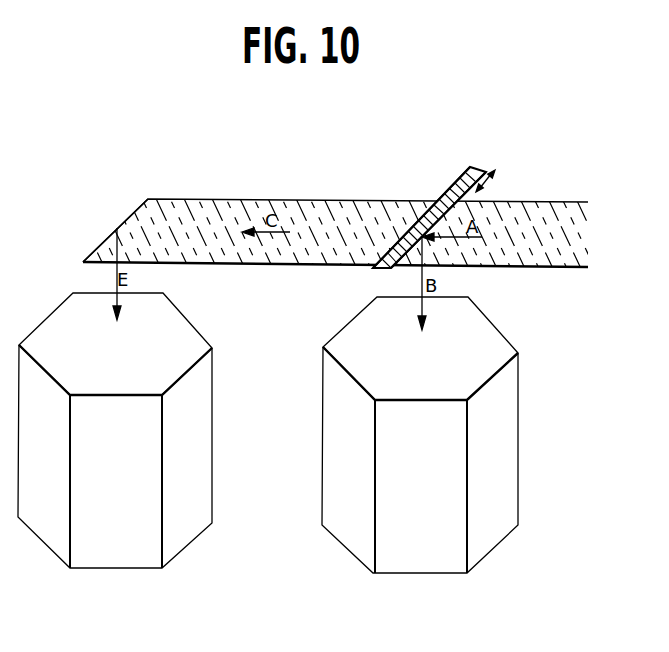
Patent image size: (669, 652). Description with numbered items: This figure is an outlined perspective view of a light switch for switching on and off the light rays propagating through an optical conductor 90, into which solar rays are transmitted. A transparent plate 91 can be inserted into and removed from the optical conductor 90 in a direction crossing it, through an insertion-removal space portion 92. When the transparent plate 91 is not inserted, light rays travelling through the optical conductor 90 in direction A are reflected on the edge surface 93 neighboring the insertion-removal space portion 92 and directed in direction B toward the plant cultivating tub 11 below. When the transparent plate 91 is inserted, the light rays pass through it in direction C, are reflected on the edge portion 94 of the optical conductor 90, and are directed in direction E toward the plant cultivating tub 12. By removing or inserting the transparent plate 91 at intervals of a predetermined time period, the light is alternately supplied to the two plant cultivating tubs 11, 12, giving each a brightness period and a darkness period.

The optical conductor 90 is at (537, 217).
The transparent plate 91 is at (448, 194).
The insertion-removal space portion 92 is at (393, 242).
The edge surface 93 is at (412, 253).
The edge portion 94 is at (95, 250).
The plant cultivating tub 11 is at (513, 467).
The plant cultivating tub 12 is at (205, 470).